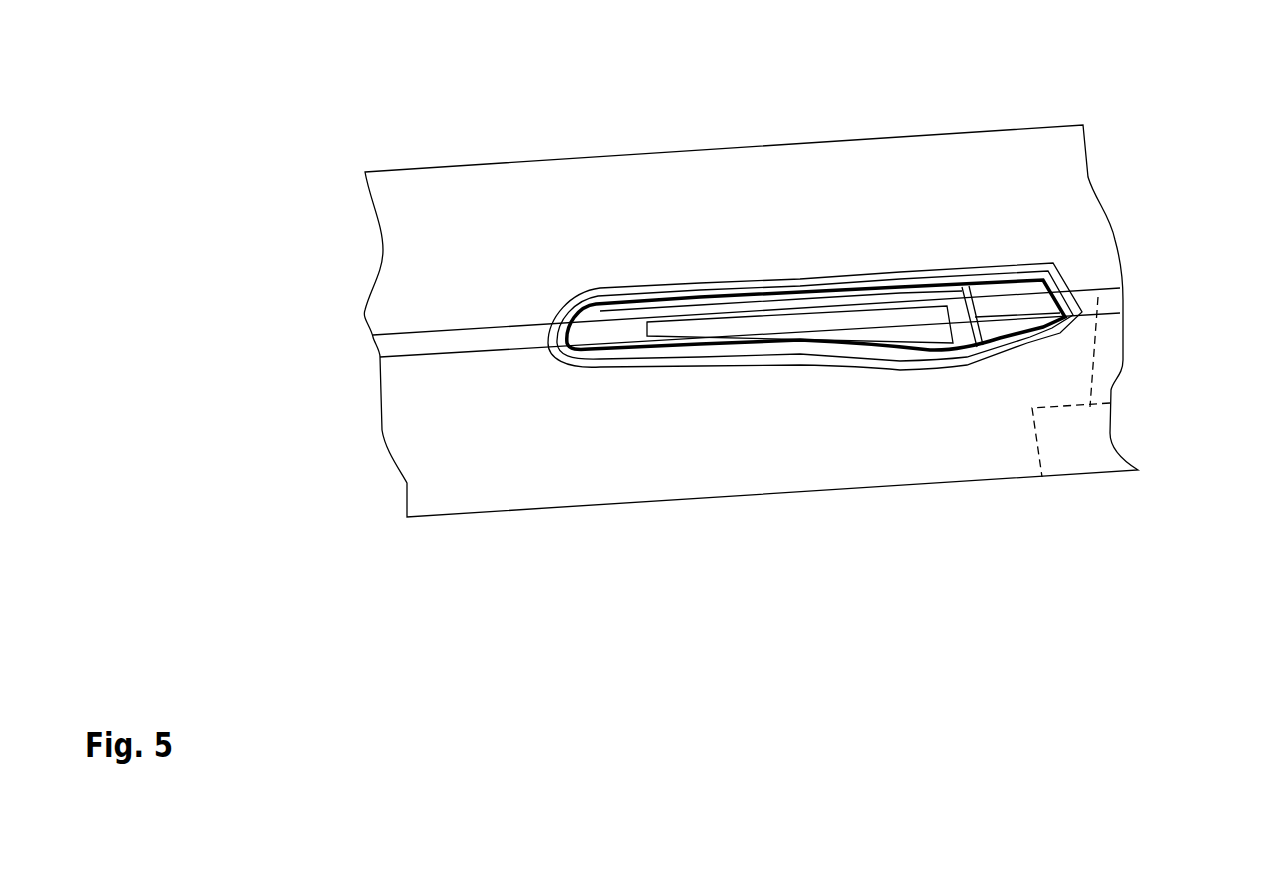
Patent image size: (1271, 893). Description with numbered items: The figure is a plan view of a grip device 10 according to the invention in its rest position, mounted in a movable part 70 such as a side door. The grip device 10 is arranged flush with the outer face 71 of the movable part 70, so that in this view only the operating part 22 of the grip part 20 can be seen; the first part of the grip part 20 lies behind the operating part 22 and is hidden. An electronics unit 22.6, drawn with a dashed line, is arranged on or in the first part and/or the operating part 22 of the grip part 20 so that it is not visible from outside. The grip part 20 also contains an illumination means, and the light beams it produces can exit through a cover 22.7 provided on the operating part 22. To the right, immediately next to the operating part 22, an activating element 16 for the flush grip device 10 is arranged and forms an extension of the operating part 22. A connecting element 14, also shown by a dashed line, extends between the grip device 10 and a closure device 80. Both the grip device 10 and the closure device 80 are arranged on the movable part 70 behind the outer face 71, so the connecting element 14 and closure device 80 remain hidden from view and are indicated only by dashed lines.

The grip device 10 is at (1007, 178).
The connecting element 14 is at (1093, 365).
The activating element 16 is at (1035, 302).
The grip part 20 is at (782, 408).
The operating part 22 is at (607, 327).
The electronics unit 22.6 is at (760, 320).
The cover 22.7 is at (930, 333).
The movable part 70 is at (746, 271).
The outer face 71 is at (523, 239).
The closure device 80 is at (1078, 438).